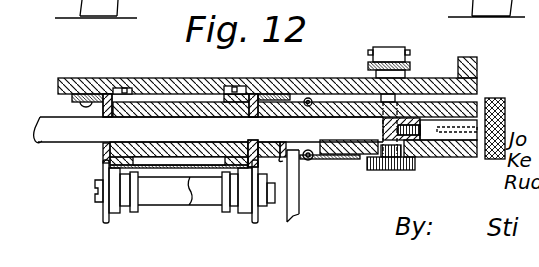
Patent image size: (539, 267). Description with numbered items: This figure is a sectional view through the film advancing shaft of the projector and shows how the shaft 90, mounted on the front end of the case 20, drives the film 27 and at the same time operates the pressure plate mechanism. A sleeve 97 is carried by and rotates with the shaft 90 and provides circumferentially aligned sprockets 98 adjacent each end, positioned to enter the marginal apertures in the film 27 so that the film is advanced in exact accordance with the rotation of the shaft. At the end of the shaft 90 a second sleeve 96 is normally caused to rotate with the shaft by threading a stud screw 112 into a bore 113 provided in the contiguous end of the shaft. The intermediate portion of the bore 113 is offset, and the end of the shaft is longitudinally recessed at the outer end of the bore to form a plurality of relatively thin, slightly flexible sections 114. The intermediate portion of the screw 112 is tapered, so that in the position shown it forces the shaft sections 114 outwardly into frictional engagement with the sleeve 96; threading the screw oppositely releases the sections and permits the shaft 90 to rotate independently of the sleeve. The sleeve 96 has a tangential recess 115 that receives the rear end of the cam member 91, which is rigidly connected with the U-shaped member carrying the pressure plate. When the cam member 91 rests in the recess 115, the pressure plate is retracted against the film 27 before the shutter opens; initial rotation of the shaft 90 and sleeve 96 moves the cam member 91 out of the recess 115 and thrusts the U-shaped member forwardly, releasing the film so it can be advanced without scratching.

The case 20 is at (477, 65).
The film 27 is at (190, 205).
The shaft 90 is at (41, 144).
The cam member 91 is at (300, 195).
The sleeve 96 is at (460, 158).
The sleeve 97 is at (113, 98).
The sprockets 98 is at (131, 90).
The stud screw 112 is at (507, 100).
The bore 113 is at (435, 116).
The flexible sections 114 is at (477, 101).
The tangential recess 115 is at (283, 159).